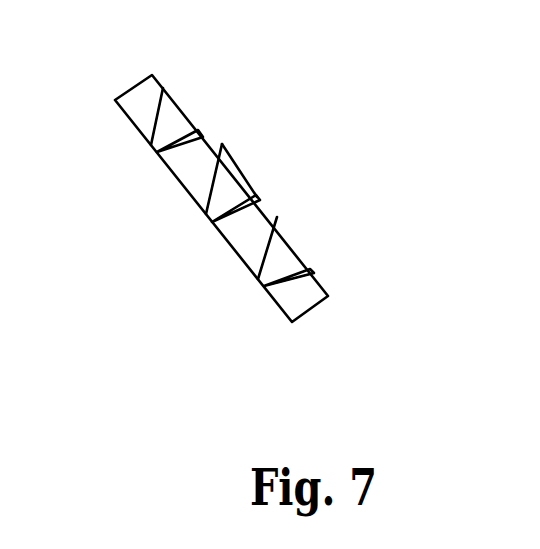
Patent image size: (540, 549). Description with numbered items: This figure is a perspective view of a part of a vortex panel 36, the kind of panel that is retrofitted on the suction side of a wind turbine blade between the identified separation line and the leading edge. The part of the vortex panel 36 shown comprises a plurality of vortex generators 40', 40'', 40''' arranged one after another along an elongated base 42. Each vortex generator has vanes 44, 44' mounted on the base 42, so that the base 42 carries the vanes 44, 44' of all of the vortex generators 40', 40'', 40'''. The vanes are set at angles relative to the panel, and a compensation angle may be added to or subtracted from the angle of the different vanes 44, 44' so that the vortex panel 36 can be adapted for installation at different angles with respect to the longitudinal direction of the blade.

The vortex panel 36 is at (110, 205).
The vortex generator 40' is at (262, 87).
The vortex generator 40'' is at (340, 154).
The vortex generator 40''' is at (393, 230).
The base 42 is at (247, 252).
The vane 44 is at (298, 192).
The vane 44' is at (255, 162).